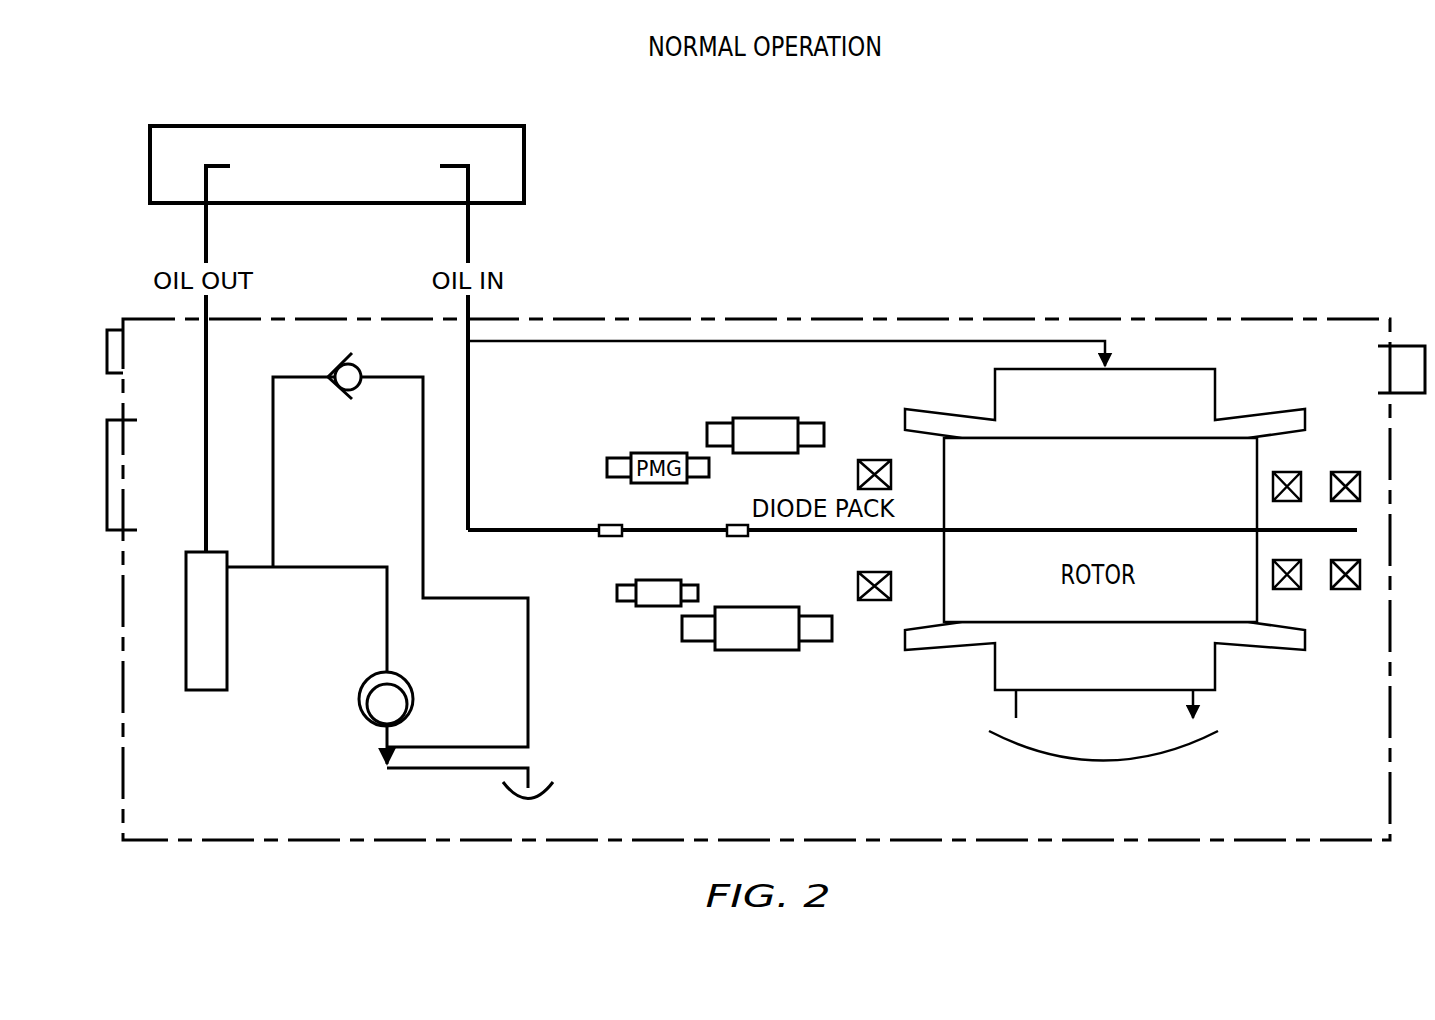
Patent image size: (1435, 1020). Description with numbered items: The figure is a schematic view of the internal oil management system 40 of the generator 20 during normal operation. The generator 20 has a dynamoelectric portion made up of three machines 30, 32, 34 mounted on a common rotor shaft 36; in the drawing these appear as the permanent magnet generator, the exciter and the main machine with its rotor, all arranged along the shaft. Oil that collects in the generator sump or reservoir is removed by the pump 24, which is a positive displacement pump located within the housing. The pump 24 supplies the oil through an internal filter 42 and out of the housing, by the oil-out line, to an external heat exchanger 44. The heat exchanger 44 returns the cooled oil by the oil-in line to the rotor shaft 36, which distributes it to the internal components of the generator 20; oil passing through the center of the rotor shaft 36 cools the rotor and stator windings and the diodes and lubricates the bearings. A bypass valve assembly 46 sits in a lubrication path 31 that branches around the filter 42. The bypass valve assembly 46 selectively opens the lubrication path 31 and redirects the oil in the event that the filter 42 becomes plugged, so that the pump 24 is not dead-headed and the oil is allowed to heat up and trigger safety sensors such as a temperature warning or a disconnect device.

The generator 20 is at (1254, 318).
The positive displacement pump 24 is at (370, 688).
The machine 30 is at (651, 623).
The lubrication path 31 is at (297, 376).
The machine 32 is at (773, 660).
The machine 34 is at (1230, 388).
The rotor shaft 36 is at (1047, 528).
The internal oil management system 40 is at (1147, 190).
The internal filter 42 is at (210, 692).
The external heat exchanger 44 is at (524, 158).
The bypass valve assembly 46 is at (355, 364).